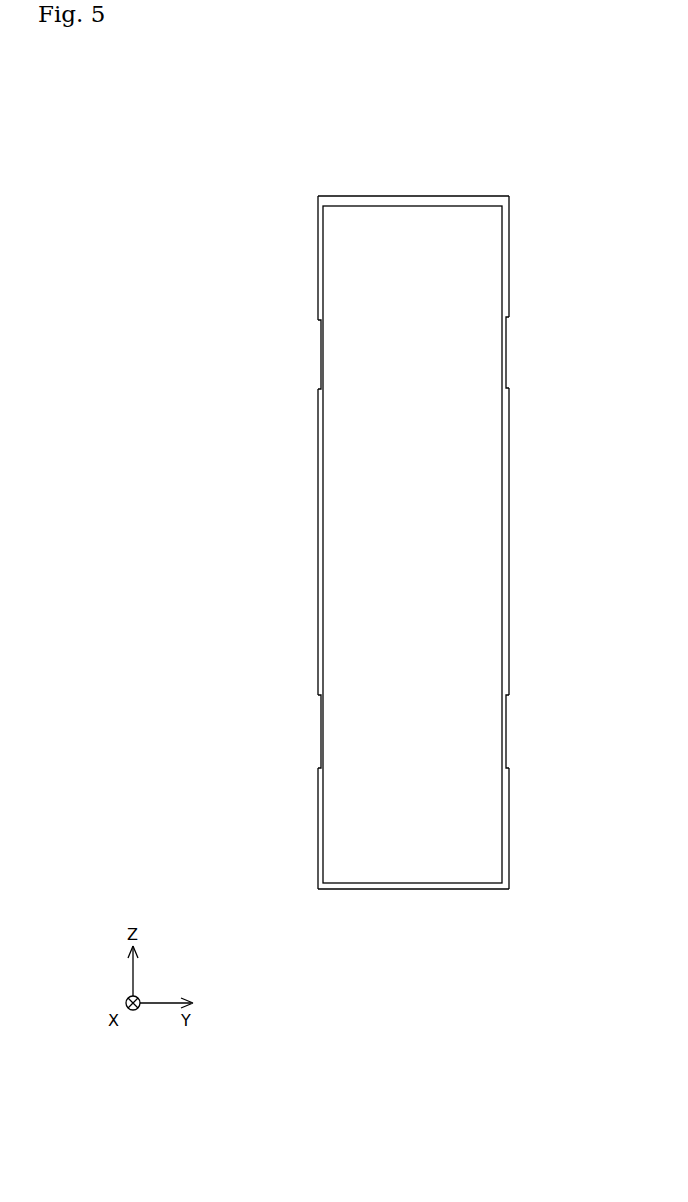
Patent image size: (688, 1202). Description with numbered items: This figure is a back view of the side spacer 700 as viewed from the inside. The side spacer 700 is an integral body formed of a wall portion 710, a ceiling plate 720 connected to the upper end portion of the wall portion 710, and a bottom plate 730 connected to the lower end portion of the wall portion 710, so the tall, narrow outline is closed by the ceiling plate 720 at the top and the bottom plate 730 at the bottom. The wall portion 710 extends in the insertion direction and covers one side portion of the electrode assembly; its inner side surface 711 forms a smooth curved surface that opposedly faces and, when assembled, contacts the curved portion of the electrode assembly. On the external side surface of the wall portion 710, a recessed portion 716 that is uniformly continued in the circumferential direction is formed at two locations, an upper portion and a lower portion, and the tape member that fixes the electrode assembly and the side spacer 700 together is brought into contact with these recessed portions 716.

The side spacer 700 is at (388, 162).
The wall portion 710 is at (508, 530).
The inner side surface 711 is at (488, 263).
The recessed portion 716 is at (505, 367).
The ceiling plate 720 is at (437, 198).
The bottom plate 730 is at (459, 884).